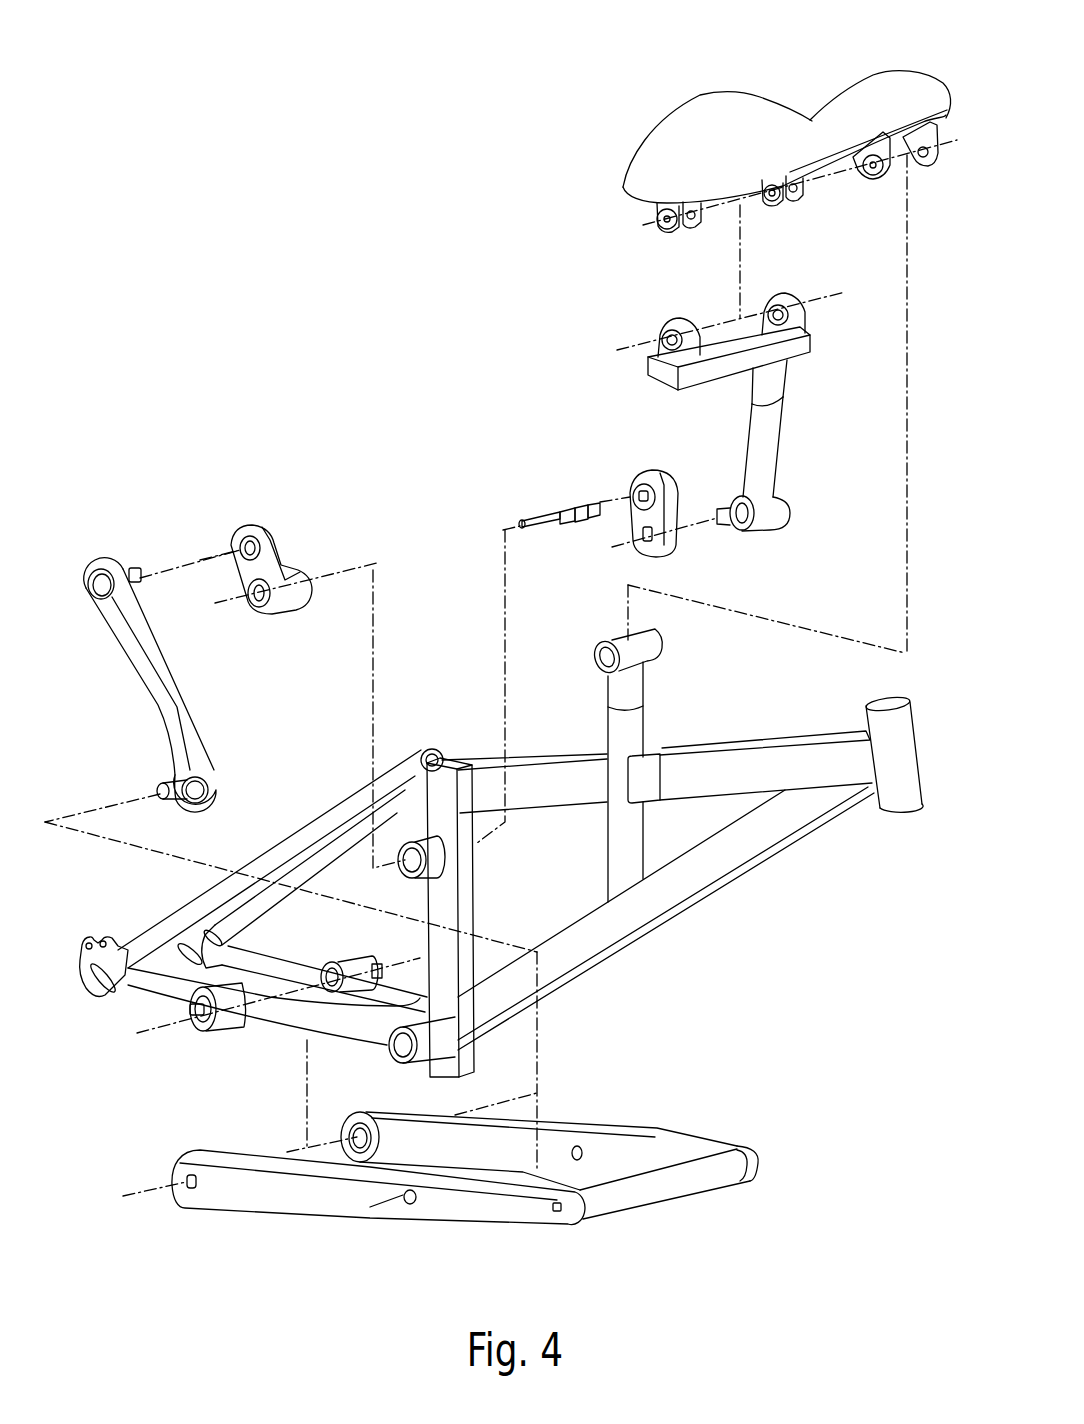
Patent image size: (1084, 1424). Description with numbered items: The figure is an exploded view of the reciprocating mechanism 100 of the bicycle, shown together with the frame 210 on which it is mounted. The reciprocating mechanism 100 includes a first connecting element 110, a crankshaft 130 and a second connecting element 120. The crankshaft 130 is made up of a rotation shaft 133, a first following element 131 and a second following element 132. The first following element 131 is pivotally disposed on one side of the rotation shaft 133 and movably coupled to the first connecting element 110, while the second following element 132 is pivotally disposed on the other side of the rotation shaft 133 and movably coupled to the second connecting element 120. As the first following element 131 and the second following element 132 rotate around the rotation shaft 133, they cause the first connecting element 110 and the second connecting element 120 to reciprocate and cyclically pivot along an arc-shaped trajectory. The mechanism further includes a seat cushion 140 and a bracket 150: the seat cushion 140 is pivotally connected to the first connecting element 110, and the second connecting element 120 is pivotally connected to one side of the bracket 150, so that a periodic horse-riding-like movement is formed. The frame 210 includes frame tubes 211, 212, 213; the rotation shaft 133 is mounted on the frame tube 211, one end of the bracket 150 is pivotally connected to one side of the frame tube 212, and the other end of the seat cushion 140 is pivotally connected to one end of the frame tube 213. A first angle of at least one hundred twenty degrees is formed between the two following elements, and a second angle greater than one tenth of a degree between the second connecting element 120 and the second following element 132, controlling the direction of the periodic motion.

The reciprocating mechanism 100 is at (203, 69).
The first connecting element 110 is at (768, 472).
The second connecting element 120 is at (143, 695).
The crankshaft 130 is at (586, 368).
The first following element 131 is at (657, 478).
The second following element 132 is at (287, 560).
The rotation shaft 133 is at (577, 495).
The seat cushion 140 is at (737, 105).
The bracket 150 is at (456, 1215).
The frame 210 is at (502, 867).
The frame tube 211 is at (467, 895).
The frame tube 212 is at (145, 983).
The frame tube 213 is at (640, 718).